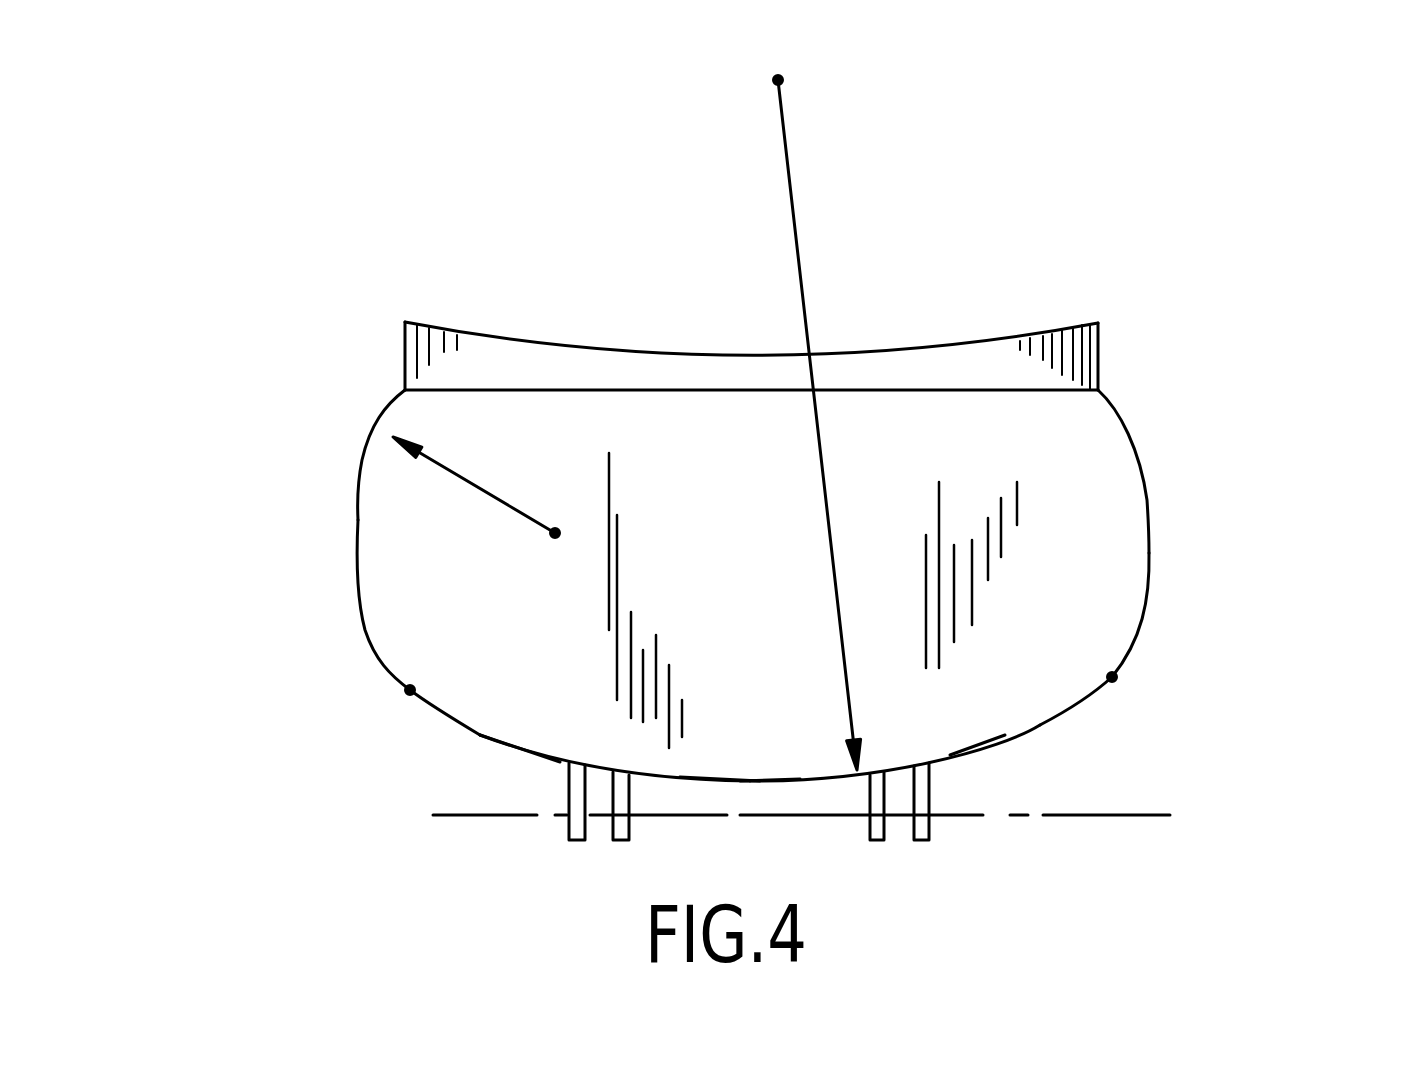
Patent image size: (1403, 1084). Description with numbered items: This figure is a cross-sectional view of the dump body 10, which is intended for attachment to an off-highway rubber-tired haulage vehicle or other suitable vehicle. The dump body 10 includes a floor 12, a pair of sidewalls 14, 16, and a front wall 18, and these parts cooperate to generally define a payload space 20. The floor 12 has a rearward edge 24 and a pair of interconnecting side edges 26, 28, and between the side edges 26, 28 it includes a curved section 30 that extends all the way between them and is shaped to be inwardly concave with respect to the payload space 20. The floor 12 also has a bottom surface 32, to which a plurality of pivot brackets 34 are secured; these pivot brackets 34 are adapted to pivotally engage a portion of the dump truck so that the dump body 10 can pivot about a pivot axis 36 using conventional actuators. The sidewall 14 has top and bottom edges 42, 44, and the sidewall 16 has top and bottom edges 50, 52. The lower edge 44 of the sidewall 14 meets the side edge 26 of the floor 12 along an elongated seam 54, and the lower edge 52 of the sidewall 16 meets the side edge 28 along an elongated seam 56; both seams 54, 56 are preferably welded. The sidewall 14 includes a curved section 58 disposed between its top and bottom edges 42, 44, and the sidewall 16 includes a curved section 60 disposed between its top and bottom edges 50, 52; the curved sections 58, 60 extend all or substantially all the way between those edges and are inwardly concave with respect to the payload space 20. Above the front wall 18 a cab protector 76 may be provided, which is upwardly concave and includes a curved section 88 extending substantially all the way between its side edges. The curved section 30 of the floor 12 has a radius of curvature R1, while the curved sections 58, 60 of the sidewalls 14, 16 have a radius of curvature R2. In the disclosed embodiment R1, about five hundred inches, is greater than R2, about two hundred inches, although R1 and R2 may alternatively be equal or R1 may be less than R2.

The dump body 10 is at (1222, 392).
The floor 12 is at (765, 781).
The sidewall 14 is at (358, 537).
The sidewall 16 is at (1147, 545).
The front wall 18 is at (695, 510).
The payload space 20 is at (875, 527).
The rearward edge 24 is at (525, 755).
The side edge 26 is at (410, 692).
The side edge 28 is at (1114, 679).
The curved section 30 is at (688, 778).
The bottom surface 32 is at (1005, 735).
The pivot brackets 34 is at (617, 843).
The pivot axis 36 is at (1095, 818).
The top edge 42 is at (403, 385).
The bottom edge 44 is at (408, 690).
The top edge 50 is at (1100, 390).
The bottom edge 52 is at (1114, 677).
The elongated seam 54 is at (412, 689).
The elongated seam 56 is at (1110, 676).
The curved section 58 is at (360, 496).
The curved section 60 is at (1146, 492).
The cab protector 76 is at (1023, 337).
The curved section 88 is at (585, 352).
The radius of curvature R1 is at (802, 257).
The radius of curvature R2 is at (465, 478).